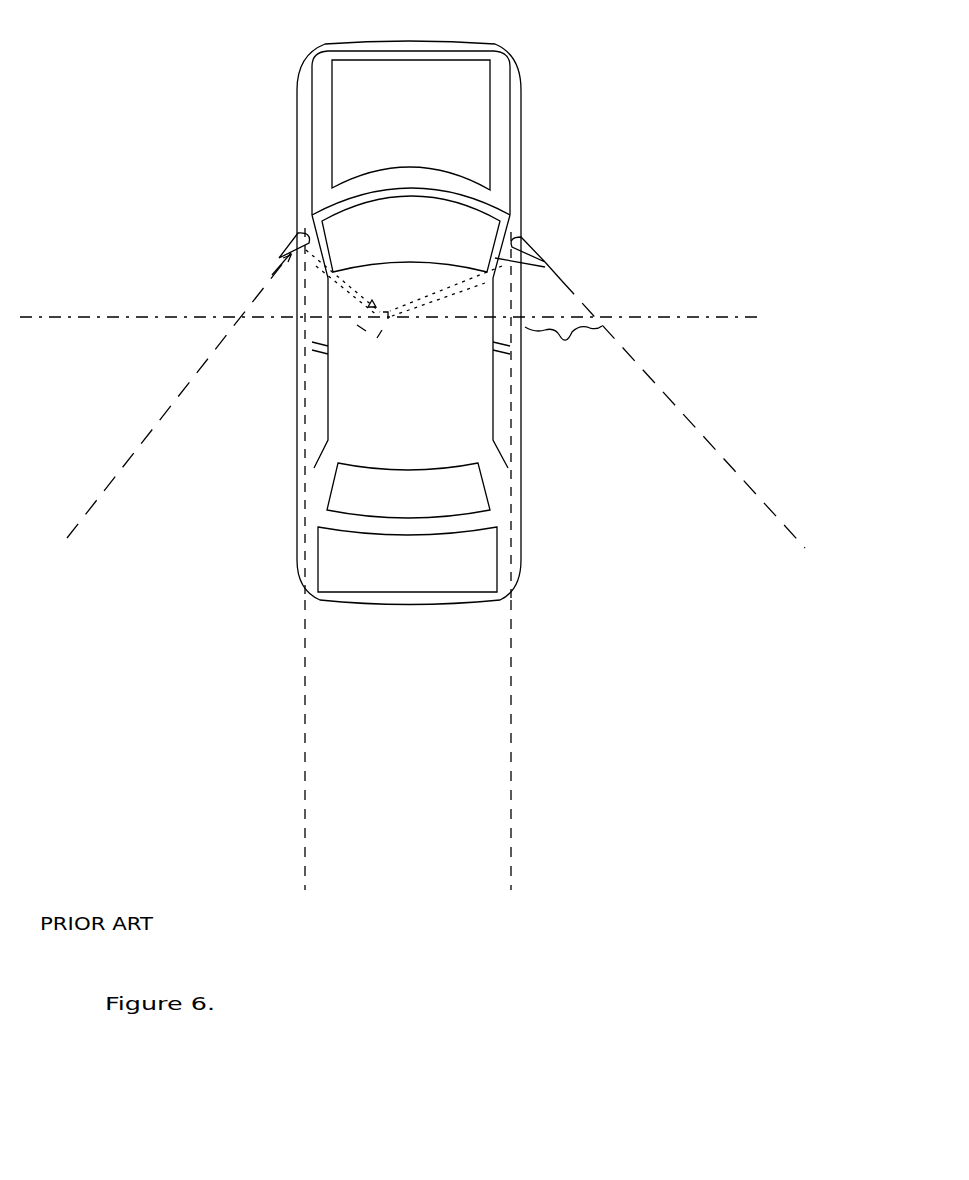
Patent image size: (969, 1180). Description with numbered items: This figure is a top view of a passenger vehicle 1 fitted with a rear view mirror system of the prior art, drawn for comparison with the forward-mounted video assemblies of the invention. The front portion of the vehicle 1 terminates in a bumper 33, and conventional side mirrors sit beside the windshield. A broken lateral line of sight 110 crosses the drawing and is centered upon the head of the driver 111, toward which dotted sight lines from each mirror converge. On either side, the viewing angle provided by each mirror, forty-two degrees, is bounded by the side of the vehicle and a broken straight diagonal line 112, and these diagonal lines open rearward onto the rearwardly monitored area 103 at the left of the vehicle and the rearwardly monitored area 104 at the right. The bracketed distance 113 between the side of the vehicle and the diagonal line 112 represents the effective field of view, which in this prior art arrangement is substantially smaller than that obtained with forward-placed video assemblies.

The bumper 33 is at (455, 38).
The passenger vehicle 1 is at (283, 224).
The lateral line of sight 110 is at (684, 312).
The head of the driver 111 is at (386, 322).
The broken straight diagonal line 112 is at (718, 451).
The distance 113 is at (562, 338).
The rearwardly monitored area 103 is at (198, 549).
The rearwardly monitored area 104 is at (665, 528).